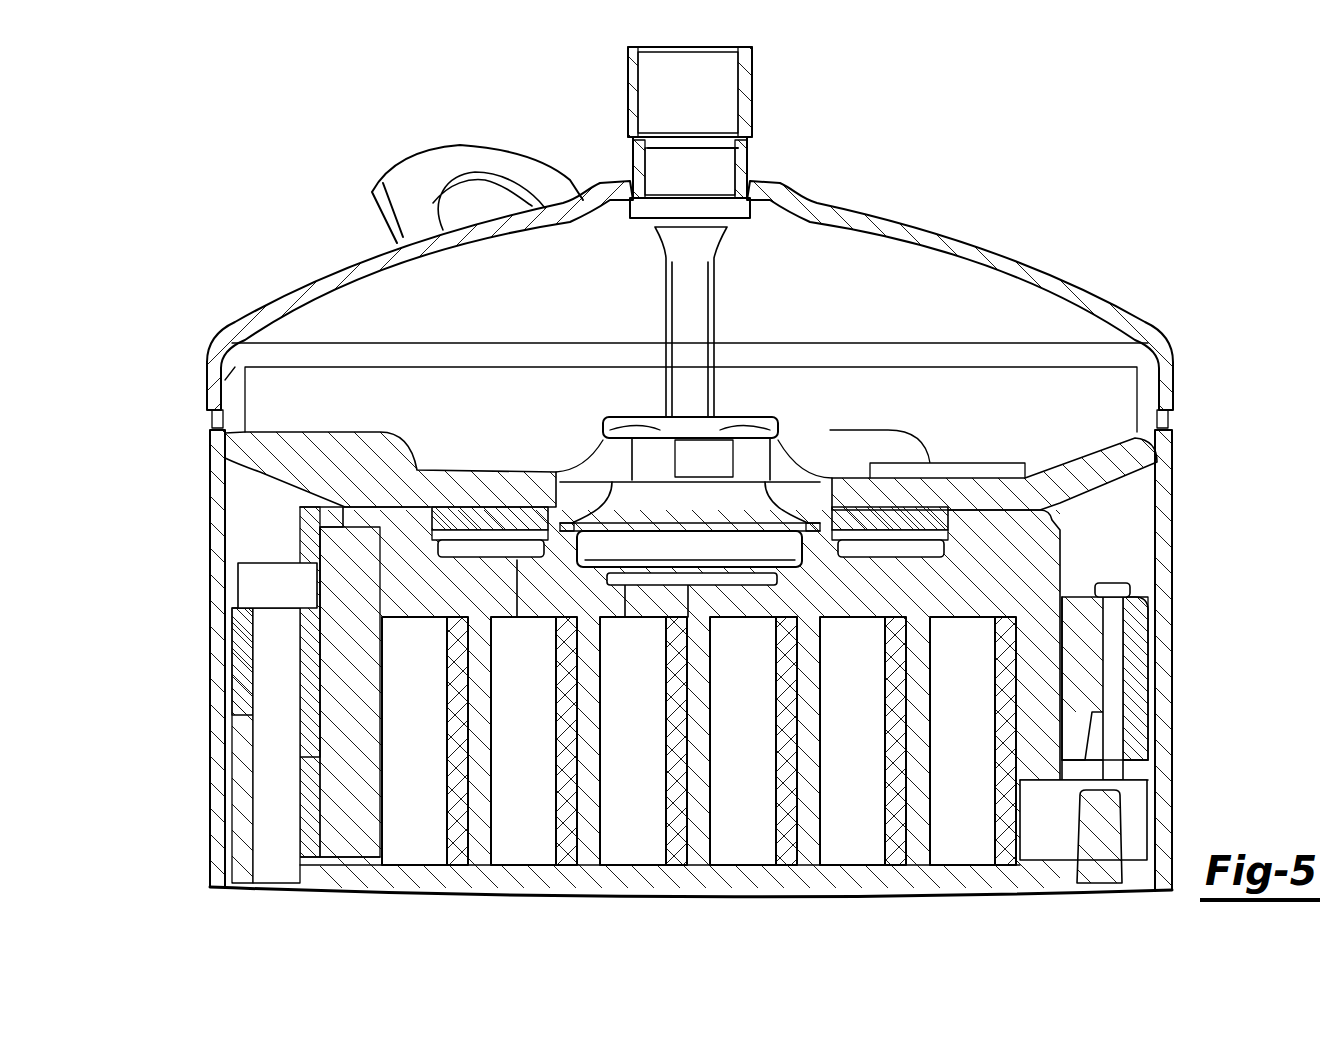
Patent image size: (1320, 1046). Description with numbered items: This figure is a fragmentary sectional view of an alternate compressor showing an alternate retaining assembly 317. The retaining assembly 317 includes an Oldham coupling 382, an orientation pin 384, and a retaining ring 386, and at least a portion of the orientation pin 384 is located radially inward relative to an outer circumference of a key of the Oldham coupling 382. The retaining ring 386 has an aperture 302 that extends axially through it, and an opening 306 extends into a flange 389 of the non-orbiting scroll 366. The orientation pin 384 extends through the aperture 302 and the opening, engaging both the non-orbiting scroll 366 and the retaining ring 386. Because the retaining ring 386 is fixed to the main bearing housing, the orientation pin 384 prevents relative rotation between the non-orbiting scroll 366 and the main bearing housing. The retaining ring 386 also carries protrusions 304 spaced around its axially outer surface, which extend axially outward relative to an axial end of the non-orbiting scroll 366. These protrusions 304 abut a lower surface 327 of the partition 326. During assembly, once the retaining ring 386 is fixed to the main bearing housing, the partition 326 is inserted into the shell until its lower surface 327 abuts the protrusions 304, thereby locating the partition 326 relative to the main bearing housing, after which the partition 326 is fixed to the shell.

The aperture 302 is at (1120, 625).
The protrusions 304 is at (300, 530).
The opening 306 is at (1142, 768).
The retaining assembly 317 is at (1122, 637).
The partition 326 is at (407, 487).
The lower surface 327 is at (388, 507).
The non-orbiting scroll 366 is at (1005, 522).
The Oldham coupling 382 is at (1108, 833).
The orientation pin 384 is at (1103, 583).
The retaining ring 386 is at (1140, 635).
The flange 389 is at (1058, 772).